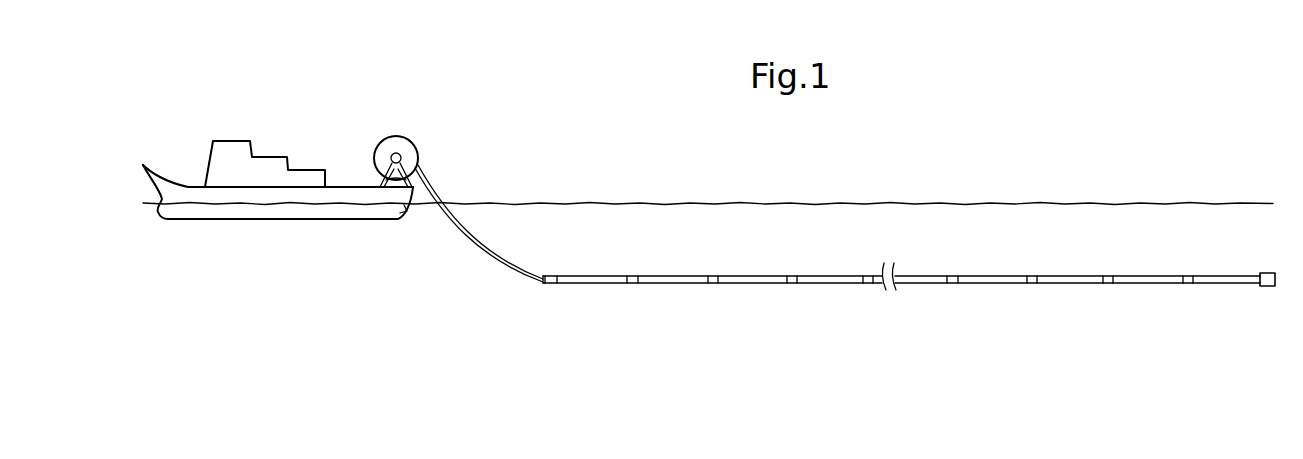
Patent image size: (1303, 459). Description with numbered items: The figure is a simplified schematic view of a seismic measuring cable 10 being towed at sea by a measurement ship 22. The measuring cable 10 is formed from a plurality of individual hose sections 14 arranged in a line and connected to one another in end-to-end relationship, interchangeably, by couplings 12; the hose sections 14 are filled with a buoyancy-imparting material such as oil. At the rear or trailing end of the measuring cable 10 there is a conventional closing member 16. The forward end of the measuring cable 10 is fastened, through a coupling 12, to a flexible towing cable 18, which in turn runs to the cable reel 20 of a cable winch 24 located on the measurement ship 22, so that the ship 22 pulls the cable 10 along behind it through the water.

The measuring cable 10 is at (760, 288).
The couplings 12 is at (550, 287).
The streamer sections 14 is at (590, 277).
The closing member 16 is at (1268, 287).
The towing cable 18 is at (468, 247).
The cable reel 20 is at (405, 148).
The measurement ship 22 is at (235, 131).
The cable winch 24 is at (378, 137).